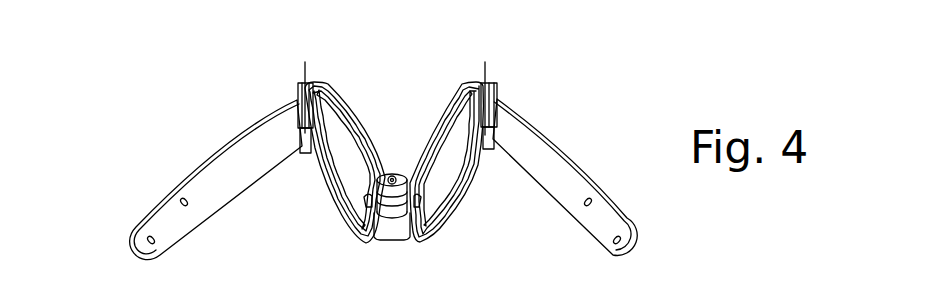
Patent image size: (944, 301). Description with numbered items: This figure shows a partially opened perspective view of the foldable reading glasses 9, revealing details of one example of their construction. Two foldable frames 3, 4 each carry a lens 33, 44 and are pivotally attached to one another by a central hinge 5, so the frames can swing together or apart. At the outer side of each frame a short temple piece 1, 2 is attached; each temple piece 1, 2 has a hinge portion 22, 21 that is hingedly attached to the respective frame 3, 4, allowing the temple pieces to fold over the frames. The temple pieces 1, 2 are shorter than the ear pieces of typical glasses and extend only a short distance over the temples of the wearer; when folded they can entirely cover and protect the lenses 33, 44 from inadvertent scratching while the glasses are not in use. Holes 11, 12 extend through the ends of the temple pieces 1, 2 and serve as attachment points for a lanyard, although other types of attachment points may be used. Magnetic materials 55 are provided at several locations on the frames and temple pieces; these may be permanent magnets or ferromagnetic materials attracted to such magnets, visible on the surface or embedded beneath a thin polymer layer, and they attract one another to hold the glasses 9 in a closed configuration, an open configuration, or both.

The temple piece 1 is at (222, 148).
The temple piece 2 is at (567, 157).
The foldable frame 3 is at (339, 159).
The foldable frame 4 is at (447, 160).
The hinge 5 is at (392, 174).
The foldable reading glasses 9 is at (536, 68).
The attachment point (hole) 11 is at (147, 240).
The attachment point (hole) 12 is at (621, 240).
The hinge portion 21 is at (496, 118).
The hinge portion 22 is at (300, 119).
The lens 33 is at (338, 198).
The lens 44 is at (452, 198).
The magnetic materials 55 is at (632, 202).